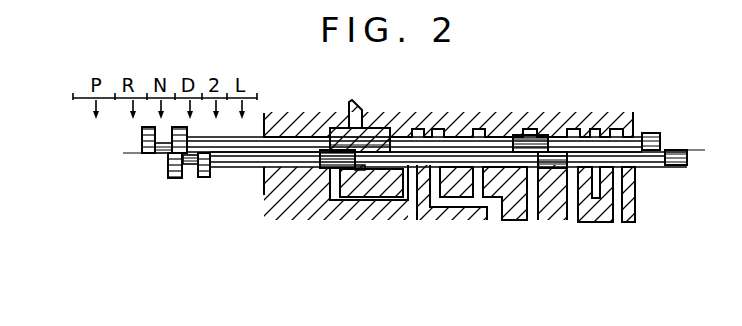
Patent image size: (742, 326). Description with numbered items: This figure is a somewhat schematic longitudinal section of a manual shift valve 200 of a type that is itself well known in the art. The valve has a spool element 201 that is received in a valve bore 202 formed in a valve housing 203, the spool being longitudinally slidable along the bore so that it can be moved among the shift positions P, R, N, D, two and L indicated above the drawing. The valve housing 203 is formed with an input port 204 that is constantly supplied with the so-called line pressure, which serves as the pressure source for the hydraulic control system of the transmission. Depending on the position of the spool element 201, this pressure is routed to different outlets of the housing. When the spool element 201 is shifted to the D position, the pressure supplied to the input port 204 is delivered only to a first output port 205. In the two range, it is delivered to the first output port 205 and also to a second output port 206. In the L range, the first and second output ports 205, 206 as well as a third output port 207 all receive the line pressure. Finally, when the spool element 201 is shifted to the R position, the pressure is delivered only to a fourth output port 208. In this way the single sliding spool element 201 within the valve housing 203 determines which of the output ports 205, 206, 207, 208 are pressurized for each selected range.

The manual shift valve 200 is at (484, 106).
The spool element 201 is at (233, 166).
The valve bore 202 is at (300, 141).
The valve housing 203 is at (315, 184).
The input port 204 is at (530, 219).
The first output port 205 is at (495, 219).
The second output port 206 is at (412, 221).
The third output port 207 is at (573, 216).
The fourth output port 208 is at (618, 216).